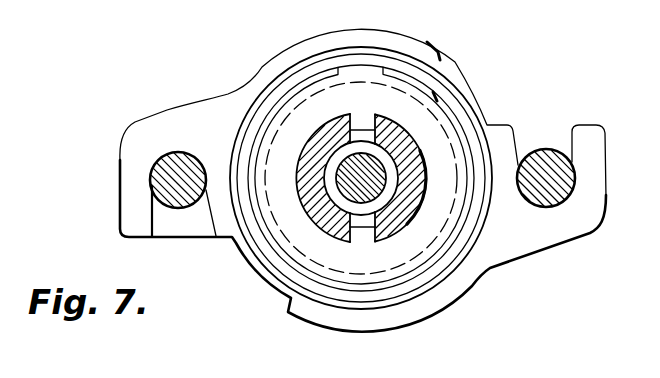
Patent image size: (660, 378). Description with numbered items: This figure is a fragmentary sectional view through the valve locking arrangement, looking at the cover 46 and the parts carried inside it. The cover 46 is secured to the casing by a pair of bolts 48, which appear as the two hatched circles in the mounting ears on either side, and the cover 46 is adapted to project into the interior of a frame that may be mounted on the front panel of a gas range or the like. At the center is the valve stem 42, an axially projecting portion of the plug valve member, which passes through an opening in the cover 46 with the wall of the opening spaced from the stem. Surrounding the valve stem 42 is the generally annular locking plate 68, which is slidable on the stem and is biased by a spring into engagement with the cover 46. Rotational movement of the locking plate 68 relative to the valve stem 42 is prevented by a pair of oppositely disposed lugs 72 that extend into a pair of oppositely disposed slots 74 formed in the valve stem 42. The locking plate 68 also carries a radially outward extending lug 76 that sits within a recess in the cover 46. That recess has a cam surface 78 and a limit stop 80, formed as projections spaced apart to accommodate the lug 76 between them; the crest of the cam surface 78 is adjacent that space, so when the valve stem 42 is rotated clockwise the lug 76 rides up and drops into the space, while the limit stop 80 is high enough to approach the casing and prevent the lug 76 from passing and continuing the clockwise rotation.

The valve stem 42 is at (315, 152).
The cover 46 is at (567, 240).
The bolts 48 is at (176, 208).
The locking plate 68 is at (422, 186).
The lugs 72 is at (357, 115).
The slots 74 is at (375, 130).
The radially outward extending lug 76 is at (373, 72).
The cam surface 78 is at (315, 78).
The limit stop 80 is at (417, 82).